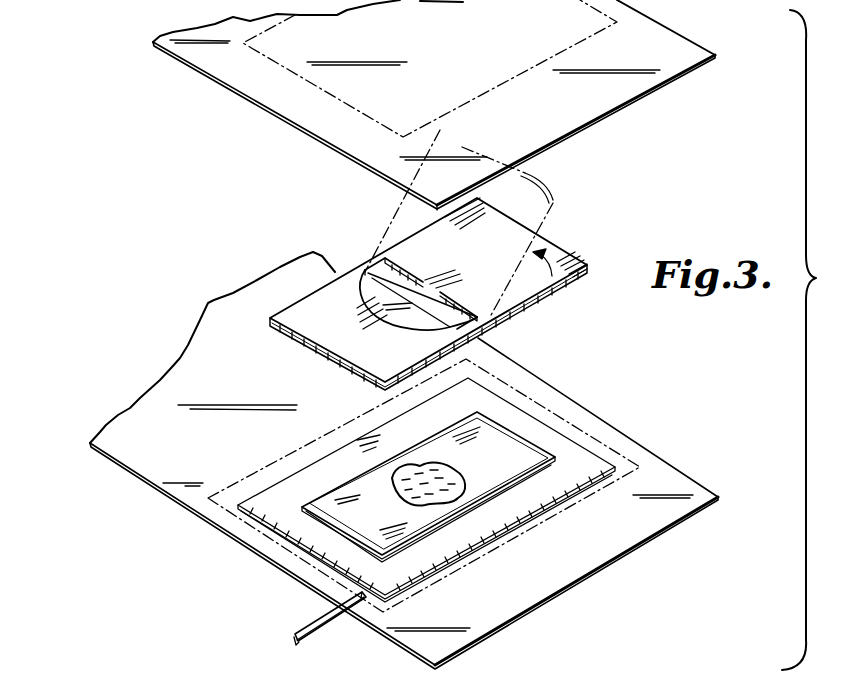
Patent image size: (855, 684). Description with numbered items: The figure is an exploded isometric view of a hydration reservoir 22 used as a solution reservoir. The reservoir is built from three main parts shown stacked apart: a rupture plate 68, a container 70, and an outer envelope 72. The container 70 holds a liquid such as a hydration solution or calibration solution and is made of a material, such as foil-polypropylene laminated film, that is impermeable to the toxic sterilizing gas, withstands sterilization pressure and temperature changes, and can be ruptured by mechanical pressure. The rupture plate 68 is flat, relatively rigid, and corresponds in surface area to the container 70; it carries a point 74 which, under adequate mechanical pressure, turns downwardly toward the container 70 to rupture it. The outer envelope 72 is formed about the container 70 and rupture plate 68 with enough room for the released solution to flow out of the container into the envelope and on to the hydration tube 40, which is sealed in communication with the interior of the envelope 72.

The hydration reservoir 22 is at (542, 347).
The hydration tube 40 is at (306, 616).
The rupture plate 68 is at (577, 249).
The container 70 is at (530, 448).
The outer envelope 72 is at (543, 63).
The point 74 is at (413, 300).